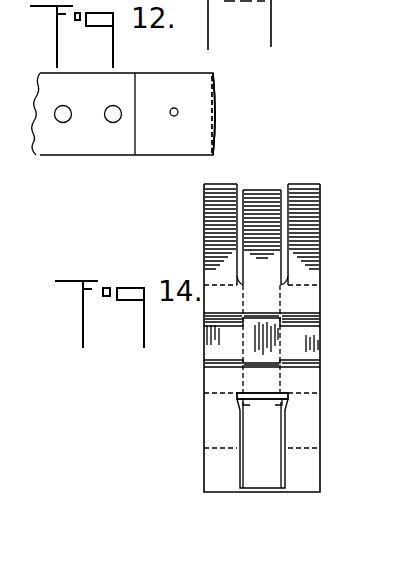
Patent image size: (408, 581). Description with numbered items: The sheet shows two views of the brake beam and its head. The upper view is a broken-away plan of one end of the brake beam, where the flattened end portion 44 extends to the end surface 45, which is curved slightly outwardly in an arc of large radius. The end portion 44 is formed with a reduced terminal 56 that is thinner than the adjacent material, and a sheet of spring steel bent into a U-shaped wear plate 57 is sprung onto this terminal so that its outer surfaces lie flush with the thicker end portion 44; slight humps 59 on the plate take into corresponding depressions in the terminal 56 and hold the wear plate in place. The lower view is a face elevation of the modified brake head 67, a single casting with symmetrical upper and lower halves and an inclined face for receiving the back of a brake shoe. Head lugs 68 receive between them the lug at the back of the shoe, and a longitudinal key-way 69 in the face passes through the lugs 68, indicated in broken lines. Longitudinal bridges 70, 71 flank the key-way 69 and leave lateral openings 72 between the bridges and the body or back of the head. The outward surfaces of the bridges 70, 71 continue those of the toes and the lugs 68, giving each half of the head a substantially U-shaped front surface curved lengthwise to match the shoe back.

In FIG. 12, the end portion 44 is at (90, 140).
In FIG. 12, the end surface 45 is at (218, 132).
In FIG. 12, the reduced terminal 56 is at (218, 92).
In FIG. 12, the U-shaped wear plate 57 is at (218, 122).
In FIG. 12, the humps 59 is at (175, 108).
In FIG. 14, the brake head 67 is at (205, 375).
In FIG. 14, the head lugs 68 is at (268, 298).
In FIG. 14, the key-way 69 is at (258, 237).
In FIG. 14, the longitudinal bridge 70 is at (210, 245).
In FIG. 14, the longitudinal bridge 71 is at (313, 253).
In FIG. 14, the lateral openings 72 is at (215, 402).